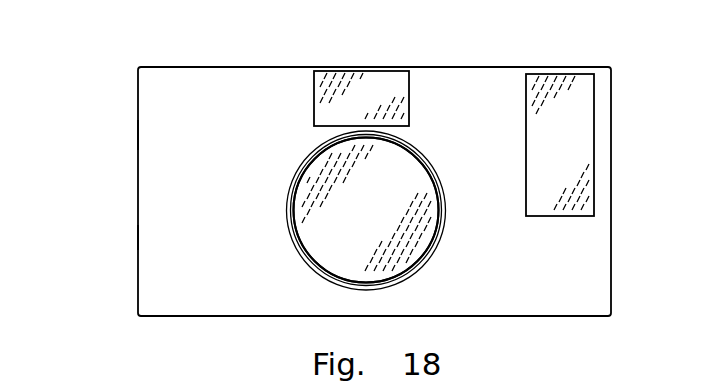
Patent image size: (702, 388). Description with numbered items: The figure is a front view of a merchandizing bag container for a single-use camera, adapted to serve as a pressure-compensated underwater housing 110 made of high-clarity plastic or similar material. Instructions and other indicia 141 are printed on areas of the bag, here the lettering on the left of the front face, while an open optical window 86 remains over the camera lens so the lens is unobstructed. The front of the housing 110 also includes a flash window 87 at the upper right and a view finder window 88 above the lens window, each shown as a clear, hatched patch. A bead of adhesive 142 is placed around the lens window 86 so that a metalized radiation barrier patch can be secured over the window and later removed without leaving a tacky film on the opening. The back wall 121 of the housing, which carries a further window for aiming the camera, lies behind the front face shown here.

The housing 110 is at (138, 298).
The back wall 121 is at (138, 237).
The indicia 141 is at (148, 135).
The view finder window 88 is at (374, 83).
The flash window 87 is at (548, 82).
The bead of adhesive 142 is at (430, 163).
The optical window 86 is at (412, 237).